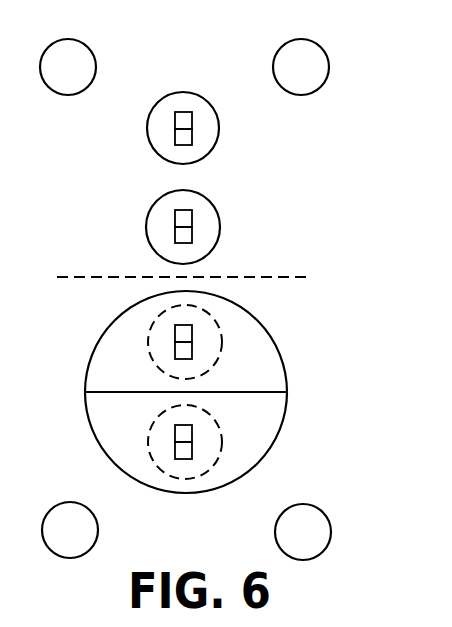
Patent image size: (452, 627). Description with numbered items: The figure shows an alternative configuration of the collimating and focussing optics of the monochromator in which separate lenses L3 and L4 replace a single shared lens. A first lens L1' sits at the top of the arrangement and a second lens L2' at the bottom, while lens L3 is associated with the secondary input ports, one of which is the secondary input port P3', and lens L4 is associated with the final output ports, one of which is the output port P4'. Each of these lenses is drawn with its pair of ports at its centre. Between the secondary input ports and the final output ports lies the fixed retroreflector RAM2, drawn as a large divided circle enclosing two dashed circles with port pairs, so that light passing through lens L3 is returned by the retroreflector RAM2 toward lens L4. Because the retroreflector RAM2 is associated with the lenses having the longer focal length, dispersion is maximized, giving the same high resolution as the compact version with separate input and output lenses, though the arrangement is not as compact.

The first lamp (left) L1' is at (66, 47).
The lens L3 is at (182, 130).
The secondary input port P3' is at (137, 119).
The lens L4 is at (183, 227).
The output port P4' is at (137, 216).
The fixed retroreflector RAM2 is at (85, 362).
The second lamp (left) L2' is at (65, 513).